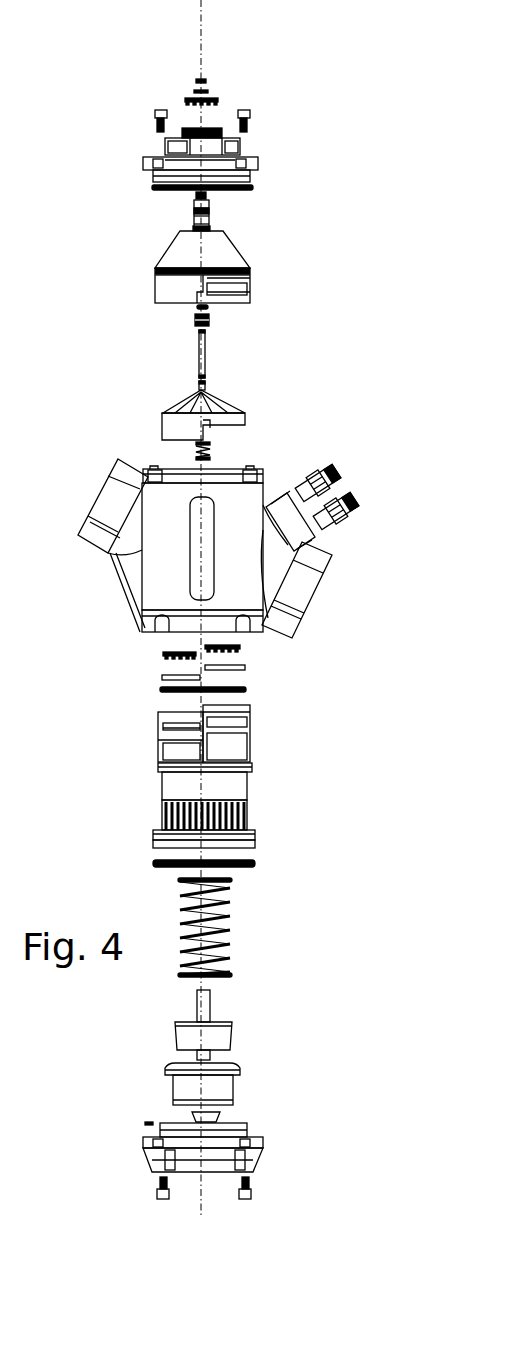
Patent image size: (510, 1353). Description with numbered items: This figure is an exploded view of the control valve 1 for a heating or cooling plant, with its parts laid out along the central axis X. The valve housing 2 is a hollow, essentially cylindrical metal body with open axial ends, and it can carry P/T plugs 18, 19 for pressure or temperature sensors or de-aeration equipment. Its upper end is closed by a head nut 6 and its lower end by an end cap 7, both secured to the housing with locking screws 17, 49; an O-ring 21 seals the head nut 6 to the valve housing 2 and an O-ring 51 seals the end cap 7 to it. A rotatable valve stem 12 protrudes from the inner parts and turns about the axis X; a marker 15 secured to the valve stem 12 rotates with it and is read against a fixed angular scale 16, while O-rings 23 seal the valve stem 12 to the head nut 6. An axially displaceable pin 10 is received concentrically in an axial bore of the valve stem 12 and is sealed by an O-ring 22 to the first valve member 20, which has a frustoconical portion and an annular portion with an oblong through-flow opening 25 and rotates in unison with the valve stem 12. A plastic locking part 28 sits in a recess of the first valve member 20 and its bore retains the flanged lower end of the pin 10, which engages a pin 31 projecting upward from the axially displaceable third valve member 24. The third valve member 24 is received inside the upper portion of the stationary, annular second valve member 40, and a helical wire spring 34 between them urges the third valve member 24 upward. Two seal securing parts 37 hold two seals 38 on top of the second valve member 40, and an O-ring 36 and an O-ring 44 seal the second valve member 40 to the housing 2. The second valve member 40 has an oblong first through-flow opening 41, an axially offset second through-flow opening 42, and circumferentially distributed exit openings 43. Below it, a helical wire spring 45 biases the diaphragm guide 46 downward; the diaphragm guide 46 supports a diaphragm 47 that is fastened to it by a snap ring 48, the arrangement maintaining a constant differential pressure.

The control valve 1 is at (340, 268).
The valve housing 2 is at (148, 590).
The head nut 6 is at (162, 156).
The end cap 7 is at (255, 1160).
The pin 10 is at (207, 352).
The valve stem 12 is at (208, 212).
The marker 15 is at (207, 90).
The angular scale 16 is at (187, 100).
The locking screws 17 is at (245, 117).
The P/T plug 18 is at (323, 468).
The P/T plug 19 is at (350, 490).
The first valve member 20 is at (173, 252).
The O-ring 21 is at (157, 184).
The O-ring 22 is at (197, 307).
The O-rings 23 is at (193, 197).
The third valve member 24 is at (167, 425).
The through-flow opening 25 is at (245, 288).
The locking part 28 is at (193, 320).
The pin 31 is at (208, 387).
The helical wire spring 34 is at (208, 448).
The O-ring 36 is at (160, 686).
The seal securing parts 37 is at (240, 663).
The seals 38 is at (240, 685).
The second valve member 40 is at (167, 787).
The first through-flow opening 41 is at (242, 718).
The second through-flow opening 42 is at (160, 732).
The exit openings 43 is at (247, 820).
The O-ring 44 is at (247, 860).
The helical wire spring 45 is at (233, 927).
The diaphragm guide 46 is at (228, 1040).
The diaphragm 47 is at (180, 1093).
The snap ring 48 is at (215, 1117).
The locking screws 49 is at (160, 1177).
The O-ring 51 is at (142, 1116).
The central axis X is at (203, 25).